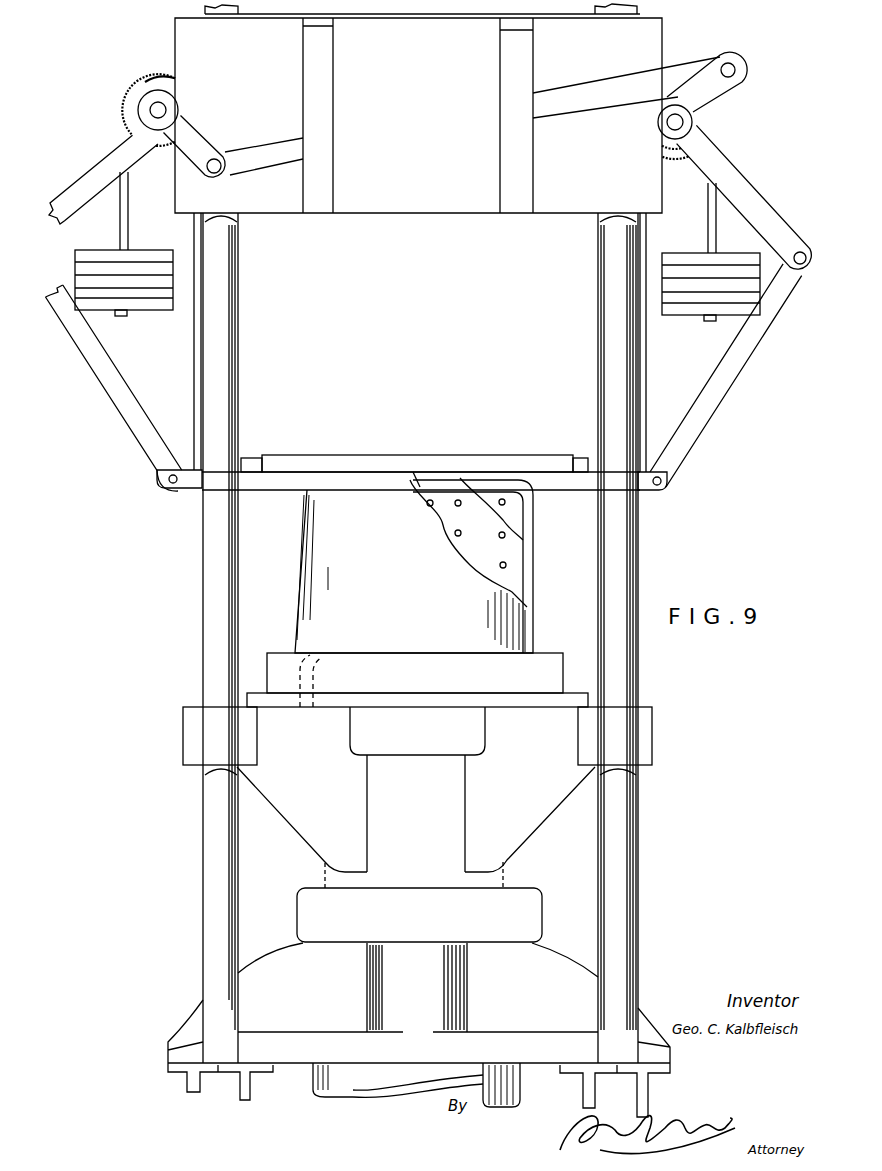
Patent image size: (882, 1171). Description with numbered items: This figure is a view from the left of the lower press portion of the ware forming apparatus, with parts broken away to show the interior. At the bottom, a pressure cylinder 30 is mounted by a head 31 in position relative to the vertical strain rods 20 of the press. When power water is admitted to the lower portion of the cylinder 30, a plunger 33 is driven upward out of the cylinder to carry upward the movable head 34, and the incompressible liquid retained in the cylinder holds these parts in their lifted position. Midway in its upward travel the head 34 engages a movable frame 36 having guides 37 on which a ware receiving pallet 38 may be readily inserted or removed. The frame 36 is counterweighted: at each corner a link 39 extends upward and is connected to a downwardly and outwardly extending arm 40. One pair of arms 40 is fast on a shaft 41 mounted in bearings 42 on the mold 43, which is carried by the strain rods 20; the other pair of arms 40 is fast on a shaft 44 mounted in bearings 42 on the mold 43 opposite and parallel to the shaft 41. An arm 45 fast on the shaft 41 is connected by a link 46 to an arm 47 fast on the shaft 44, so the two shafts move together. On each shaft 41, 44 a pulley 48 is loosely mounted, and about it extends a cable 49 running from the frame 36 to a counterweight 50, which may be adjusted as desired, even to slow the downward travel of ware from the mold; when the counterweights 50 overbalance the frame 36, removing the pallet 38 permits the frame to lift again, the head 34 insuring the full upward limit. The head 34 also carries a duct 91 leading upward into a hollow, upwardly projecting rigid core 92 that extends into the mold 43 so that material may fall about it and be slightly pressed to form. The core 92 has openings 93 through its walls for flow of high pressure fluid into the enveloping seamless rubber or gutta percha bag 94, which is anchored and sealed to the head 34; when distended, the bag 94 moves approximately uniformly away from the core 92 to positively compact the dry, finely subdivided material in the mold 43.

The strain rods 20 is at (202, 898).
The pressure cylinder 30 is at (518, 1090).
The head 31 is at (540, 892).
The plunger 33 is at (392, 1093).
The head 34 is at (643, 730).
The movable frame 36 is at (187, 490).
The guides 37 is at (252, 457).
The ware receiving pallet 38 is at (308, 455).
The link 39 is at (120, 420).
The arm 40 is at (62, 193).
The shaft 41 is at (163, 110).
The bearings 42 is at (166, 77).
The mold 43 is at (678, 160).
The shaft 44 is at (660, 122).
The arm 45 is at (207, 135).
The link 46 is at (418, 113).
The arm 47 is at (735, 92).
The pulley 48 is at (123, 101).
The cable 49 is at (120, 222).
The counterweight 50 is at (155, 312).
The duct 91 is at (320, 667).
The core 92 is at (522, 555).
The openings 93 is at (505, 566).
The bag 94 is at (525, 598).